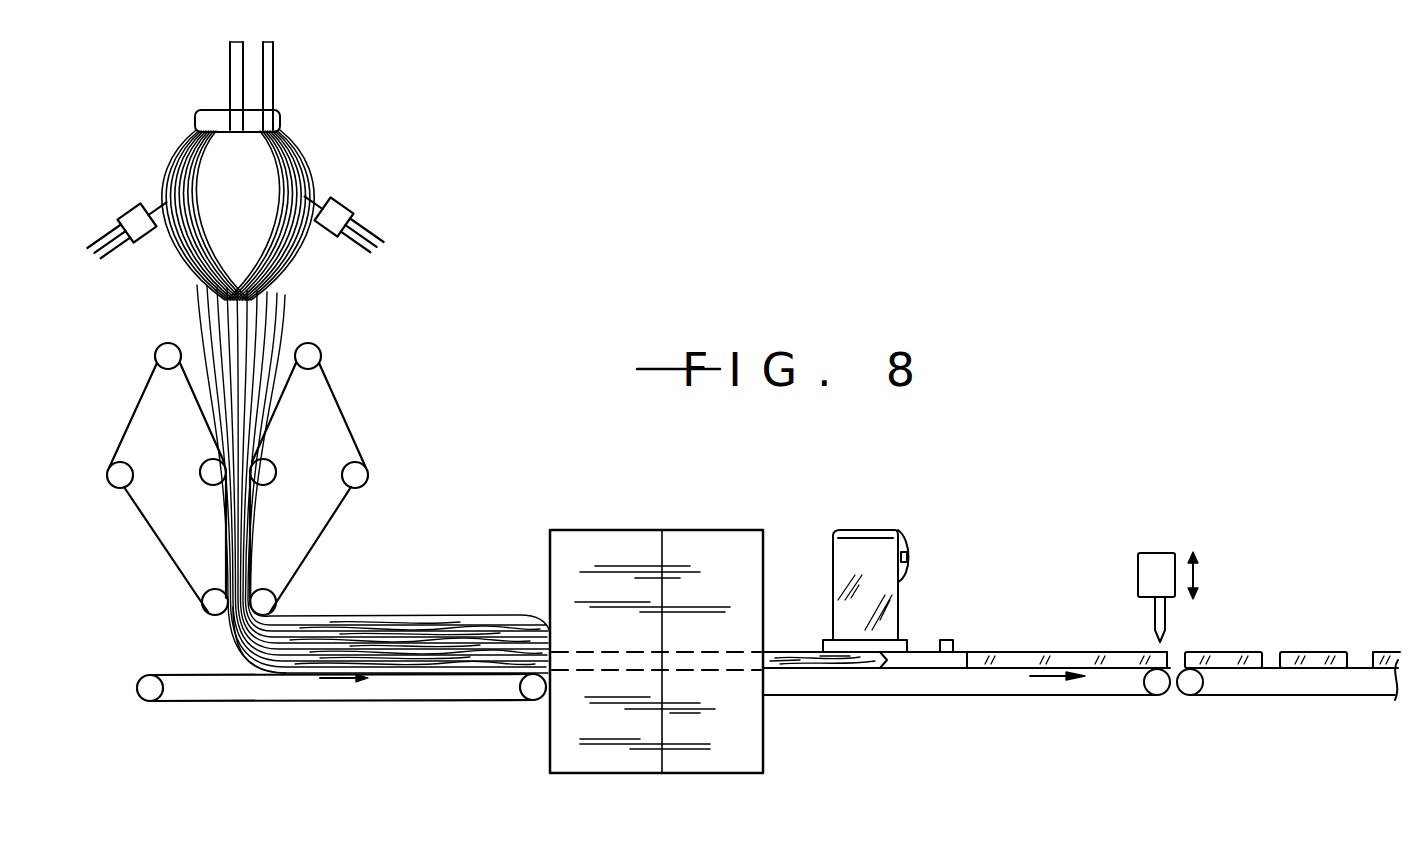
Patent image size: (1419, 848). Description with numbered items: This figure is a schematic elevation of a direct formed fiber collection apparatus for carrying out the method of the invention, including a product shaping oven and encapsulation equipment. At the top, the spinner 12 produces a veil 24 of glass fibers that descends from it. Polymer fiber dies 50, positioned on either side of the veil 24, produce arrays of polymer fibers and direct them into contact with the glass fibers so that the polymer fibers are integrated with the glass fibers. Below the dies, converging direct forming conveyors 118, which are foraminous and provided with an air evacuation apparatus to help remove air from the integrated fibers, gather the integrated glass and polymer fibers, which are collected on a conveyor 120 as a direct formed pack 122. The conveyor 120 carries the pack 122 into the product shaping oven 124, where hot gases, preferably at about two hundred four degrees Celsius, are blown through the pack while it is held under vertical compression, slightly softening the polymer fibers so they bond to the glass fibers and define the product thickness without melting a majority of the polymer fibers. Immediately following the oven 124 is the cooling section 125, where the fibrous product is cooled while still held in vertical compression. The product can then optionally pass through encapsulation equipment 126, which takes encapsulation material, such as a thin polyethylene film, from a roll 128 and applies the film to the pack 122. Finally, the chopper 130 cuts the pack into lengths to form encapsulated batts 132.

The spinner 12 is at (212, 110).
The veil 24 is at (303, 160).
The polymer fiber dies 50 is at (140, 203).
The direct forming conveyors 118 is at (135, 410).
The conveyor 120 is at (282, 702).
The direct formed pack 122 is at (228, 643).
The product shaping oven 124 is at (551, 760).
The cooling section 125 is at (763, 735).
The encapsulation equipment 126 is at (920, 650).
The roll 128 is at (905, 535).
The chopper 130 is at (1138, 575).
The encapsulated batts 132 is at (1303, 652).